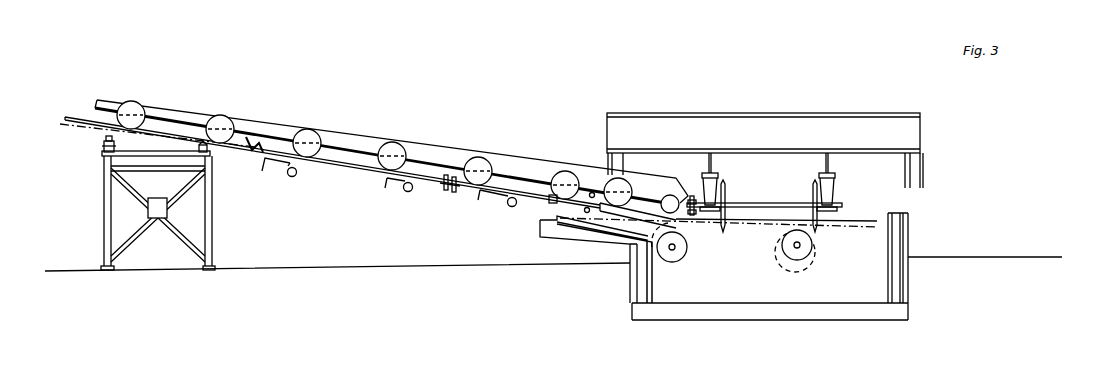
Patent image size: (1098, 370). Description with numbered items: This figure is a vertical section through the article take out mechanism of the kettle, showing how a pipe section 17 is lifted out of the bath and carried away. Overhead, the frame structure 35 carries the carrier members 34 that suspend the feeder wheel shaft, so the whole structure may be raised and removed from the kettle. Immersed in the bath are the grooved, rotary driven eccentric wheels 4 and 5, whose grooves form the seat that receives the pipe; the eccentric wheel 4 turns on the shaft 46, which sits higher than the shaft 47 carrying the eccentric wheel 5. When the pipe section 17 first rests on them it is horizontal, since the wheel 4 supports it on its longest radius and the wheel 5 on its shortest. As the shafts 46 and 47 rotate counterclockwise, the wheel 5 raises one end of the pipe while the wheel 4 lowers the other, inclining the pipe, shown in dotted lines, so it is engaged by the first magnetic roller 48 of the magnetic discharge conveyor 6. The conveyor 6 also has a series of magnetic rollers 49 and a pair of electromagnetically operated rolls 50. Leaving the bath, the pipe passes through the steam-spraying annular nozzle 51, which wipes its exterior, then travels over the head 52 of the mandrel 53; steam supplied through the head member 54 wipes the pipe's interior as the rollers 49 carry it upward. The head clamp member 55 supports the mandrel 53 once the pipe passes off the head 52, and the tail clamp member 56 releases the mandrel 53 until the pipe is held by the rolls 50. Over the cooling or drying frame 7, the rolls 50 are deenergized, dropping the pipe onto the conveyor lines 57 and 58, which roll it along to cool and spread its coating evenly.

The eccentric wheel 4 is at (812, 258).
The eccentric wheel 5 is at (683, 260).
The magnetic discharge conveyor 6 is at (383, 130).
The cooling or drying frame 7 is at (105, 213).
The pipe section 17 is at (652, 210).
The carrier members 34 is at (835, 183).
The frame structure 35 is at (736, 140).
The shaft 46 is at (807, 245).
The shaft 47 is at (678, 248).
The first magnetic roller 48 is at (672, 196).
The magnetic rollers 49 is at (317, 135).
The electromagnetically operated rolls 50 is at (215, 118).
The steam-spraying annular nozzle 51 is at (587, 213).
The head of the mandrel 52 is at (553, 200).
The mandrel 53 is at (353, 172).
The head member 54 is at (257, 140).
The head clamp member 55 is at (493, 198).
The tail clamp member 56 is at (280, 165).
The conveyor line 57 is at (102, 138).
The conveyor line 58 is at (200, 147).